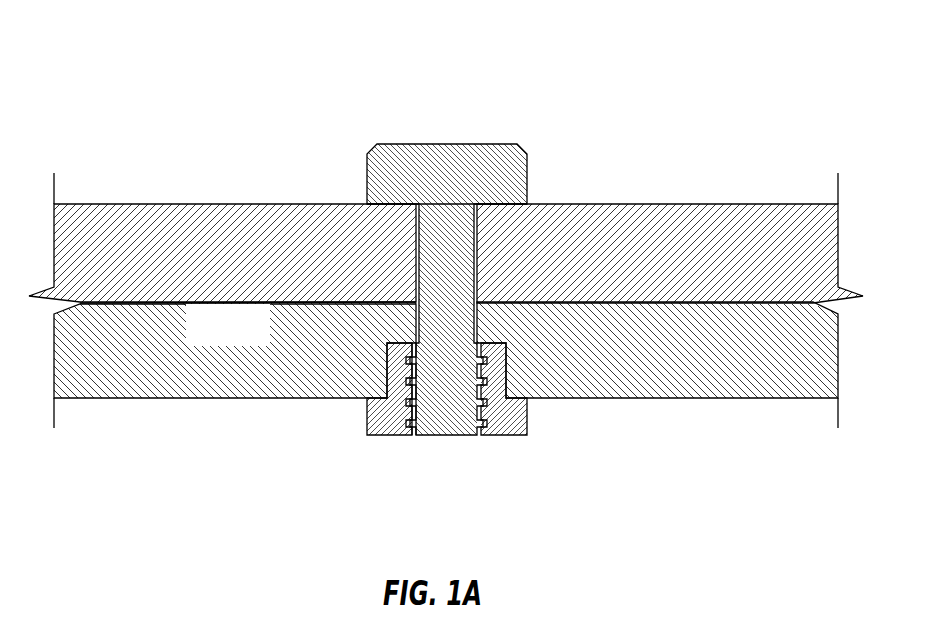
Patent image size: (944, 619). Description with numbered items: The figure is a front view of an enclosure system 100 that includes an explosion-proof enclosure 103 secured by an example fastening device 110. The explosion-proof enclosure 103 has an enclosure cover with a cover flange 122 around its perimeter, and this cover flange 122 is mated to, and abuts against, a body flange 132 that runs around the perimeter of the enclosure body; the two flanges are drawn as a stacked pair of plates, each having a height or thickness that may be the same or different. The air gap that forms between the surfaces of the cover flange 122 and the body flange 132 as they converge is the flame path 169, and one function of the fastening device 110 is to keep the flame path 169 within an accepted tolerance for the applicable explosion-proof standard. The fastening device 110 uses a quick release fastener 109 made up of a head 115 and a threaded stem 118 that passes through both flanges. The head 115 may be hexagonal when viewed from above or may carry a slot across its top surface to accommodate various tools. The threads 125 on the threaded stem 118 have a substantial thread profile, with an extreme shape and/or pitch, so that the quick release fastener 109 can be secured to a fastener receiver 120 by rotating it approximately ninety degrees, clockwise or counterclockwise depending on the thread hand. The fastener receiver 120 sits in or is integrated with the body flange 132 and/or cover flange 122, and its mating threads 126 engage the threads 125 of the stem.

The enclosure system 100 is at (444, 279).
The explosion-proof enclosure 103 is at (446, 282).
The quick release fastener 109 is at (431, 298).
The fastening device 110 is at (431, 339).
The head 115 is at (527, 180).
The threaded stem 118 is at (417, 262).
The fastener receiver 120 is at (453, 412).
The cover flange 122 is at (683, 204).
The threads 125 is at (440, 410).
The mating threads 126 is at (412, 420).
The body flange 132 is at (658, 398).
The flame path 169 is at (278, 302).